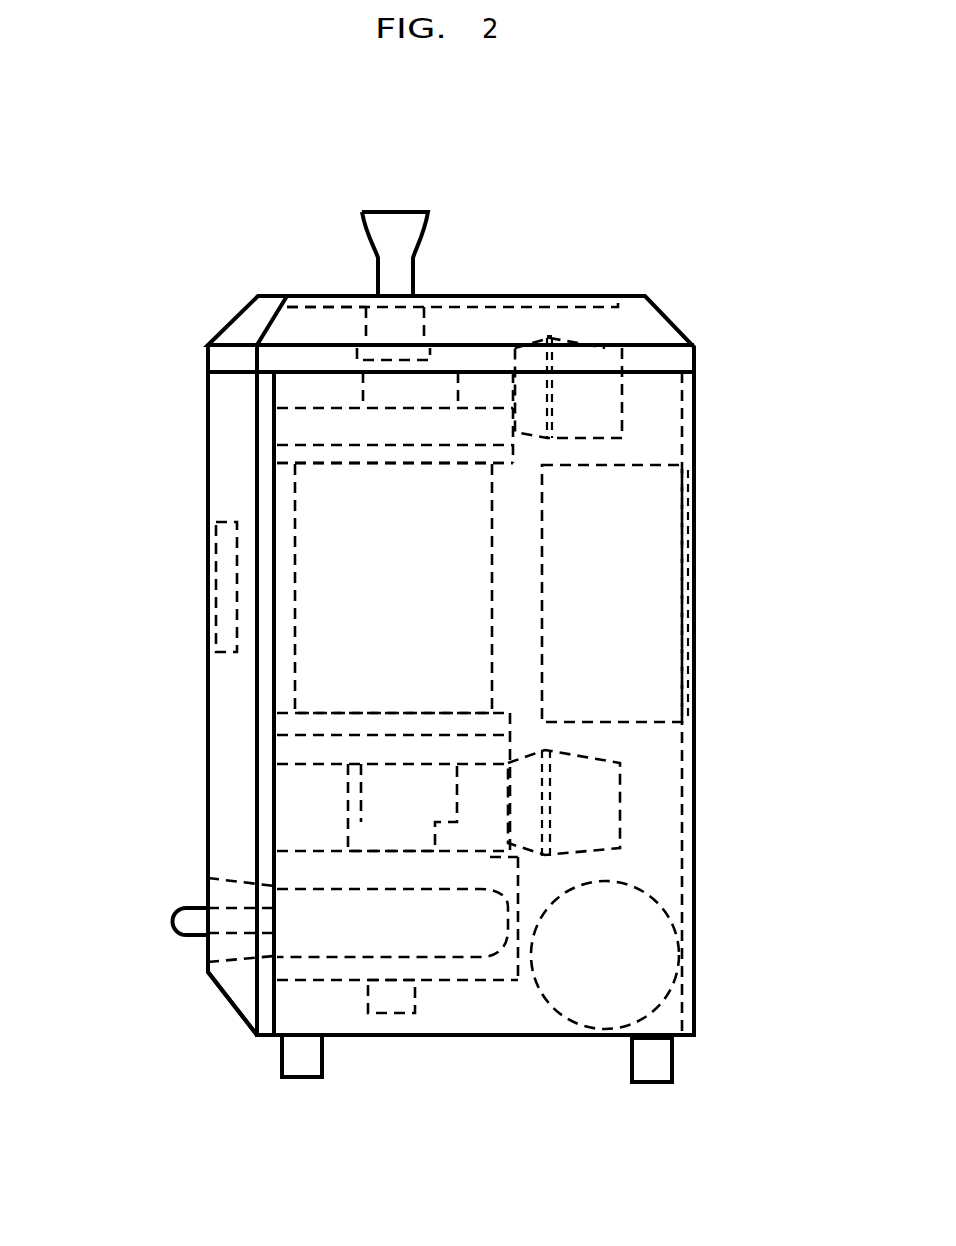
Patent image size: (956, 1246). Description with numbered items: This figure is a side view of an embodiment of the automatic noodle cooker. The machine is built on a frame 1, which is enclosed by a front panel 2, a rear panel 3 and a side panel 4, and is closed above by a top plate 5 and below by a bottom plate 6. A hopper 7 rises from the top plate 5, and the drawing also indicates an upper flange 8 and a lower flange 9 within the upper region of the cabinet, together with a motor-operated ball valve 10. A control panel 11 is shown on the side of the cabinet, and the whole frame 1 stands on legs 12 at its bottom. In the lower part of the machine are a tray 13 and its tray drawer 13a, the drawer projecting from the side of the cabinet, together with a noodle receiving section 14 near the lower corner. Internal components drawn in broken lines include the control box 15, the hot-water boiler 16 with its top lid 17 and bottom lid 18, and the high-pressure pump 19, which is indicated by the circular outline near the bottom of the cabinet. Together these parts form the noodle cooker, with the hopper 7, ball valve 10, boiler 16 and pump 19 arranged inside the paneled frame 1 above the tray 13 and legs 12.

The frame 1 is at (653, 862).
The front panel 2 is at (208, 497).
The rear panel 3 is at (695, 452).
The side panel 4 is at (653, 427).
The top plate 5 is at (277, 294).
The bottom plate 6 is at (350, 307).
The hopper 7 is at (402, 212).
The upper flange 8 is at (363, 330).
The lower flange 9 is at (348, 833).
The motor-operated ball valve 10 is at (362, 392).
The control panel 11 is at (216, 583).
The legs 12 is at (322, 1055).
The tray 13 is at (323, 953).
The tray drawer 13a is at (192, 923).
The noodle receiving section 14 is at (255, 1033).
The control box 15 is at (693, 593).
The hot-water boiler 16 is at (295, 675).
The top lid to the boiler 17 is at (310, 443).
The bottom lid to the boiler 18 is at (273, 740).
The high-pressure pump 19 is at (653, 923).